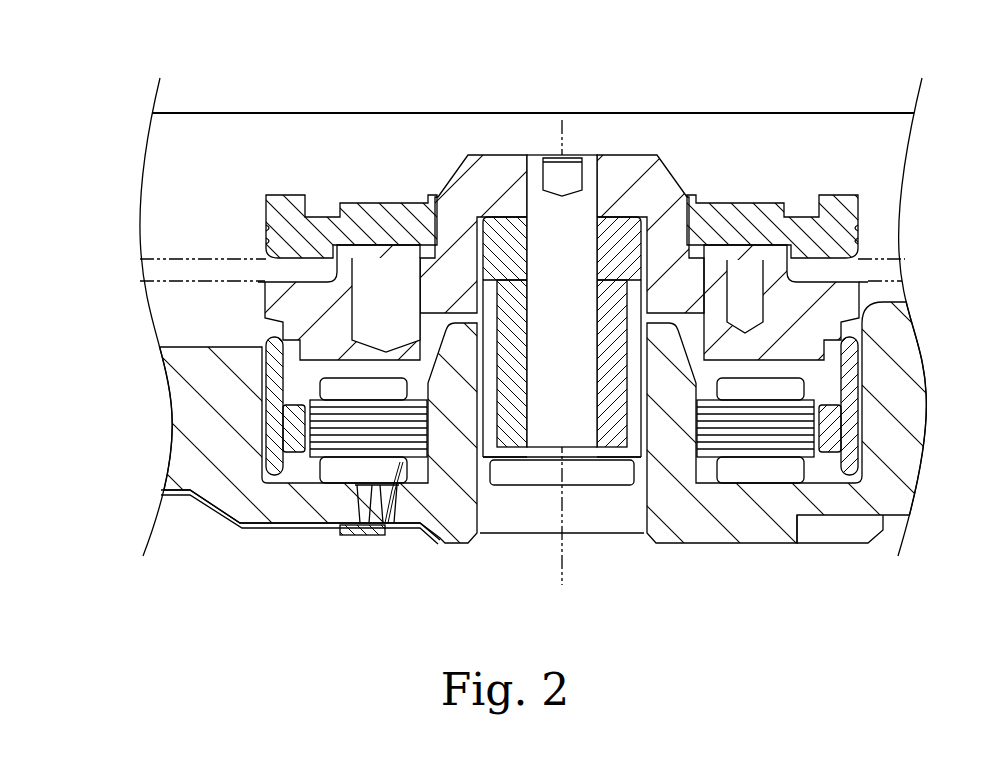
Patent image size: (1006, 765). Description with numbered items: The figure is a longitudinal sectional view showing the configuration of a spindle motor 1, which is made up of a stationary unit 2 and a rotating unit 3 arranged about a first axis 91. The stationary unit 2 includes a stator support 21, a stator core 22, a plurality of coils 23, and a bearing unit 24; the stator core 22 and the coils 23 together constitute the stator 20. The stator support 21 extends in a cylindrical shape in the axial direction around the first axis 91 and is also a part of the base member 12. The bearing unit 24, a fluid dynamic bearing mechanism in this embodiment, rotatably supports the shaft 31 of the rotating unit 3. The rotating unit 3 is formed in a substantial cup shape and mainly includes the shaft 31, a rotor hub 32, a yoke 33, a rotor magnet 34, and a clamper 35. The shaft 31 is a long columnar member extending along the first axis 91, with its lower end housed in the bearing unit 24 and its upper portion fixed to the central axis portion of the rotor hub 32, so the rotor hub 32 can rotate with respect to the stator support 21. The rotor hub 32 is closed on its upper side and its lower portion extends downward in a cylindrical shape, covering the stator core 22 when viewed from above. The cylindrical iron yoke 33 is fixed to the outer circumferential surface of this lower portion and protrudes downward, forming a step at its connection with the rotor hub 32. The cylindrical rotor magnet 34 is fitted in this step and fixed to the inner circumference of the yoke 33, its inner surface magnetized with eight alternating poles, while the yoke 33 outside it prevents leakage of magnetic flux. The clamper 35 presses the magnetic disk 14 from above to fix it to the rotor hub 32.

The spindle motor 1 is at (563, 240).
The stationary unit 2 is at (543, 428).
The rotating unit 3 is at (452, 155).
The base member 12 is at (210, 529).
The magnetic disk 14 is at (872, 282).
The stator 20 is at (562, 517).
The stator support 21 is at (462, 490).
The stator core 22 is at (695, 467).
The coils 23 is at (332, 470).
The bearing unit 24 is at (607, 492).
The shaft 31 is at (537, 168).
The rotor hub 32 is at (663, 183).
The yoke 33 is at (855, 417).
The rotor magnet 34 is at (828, 490).
The clamper 35 is at (857, 205).
The first axis 91 is at (562, 507).